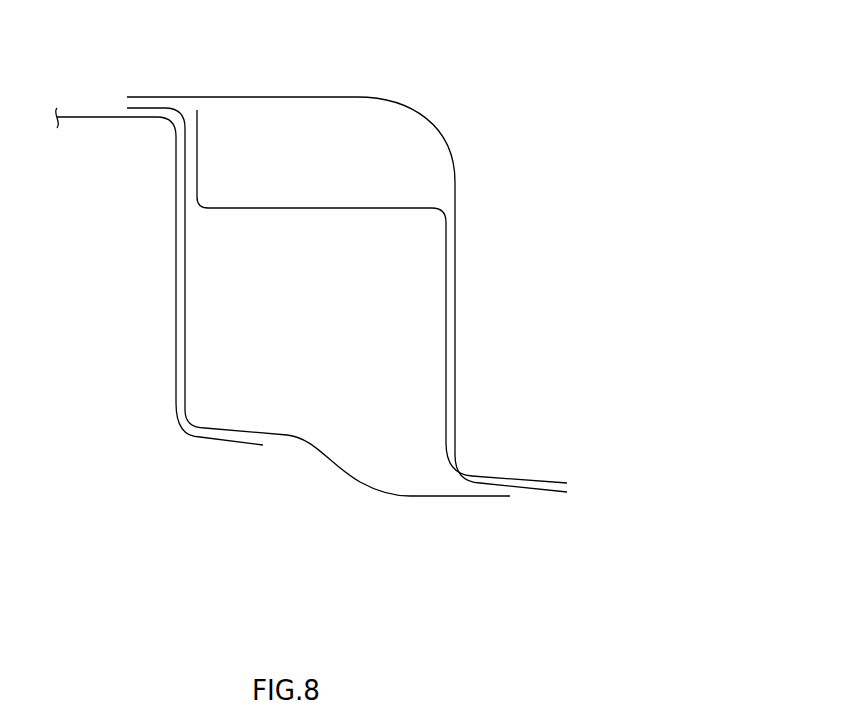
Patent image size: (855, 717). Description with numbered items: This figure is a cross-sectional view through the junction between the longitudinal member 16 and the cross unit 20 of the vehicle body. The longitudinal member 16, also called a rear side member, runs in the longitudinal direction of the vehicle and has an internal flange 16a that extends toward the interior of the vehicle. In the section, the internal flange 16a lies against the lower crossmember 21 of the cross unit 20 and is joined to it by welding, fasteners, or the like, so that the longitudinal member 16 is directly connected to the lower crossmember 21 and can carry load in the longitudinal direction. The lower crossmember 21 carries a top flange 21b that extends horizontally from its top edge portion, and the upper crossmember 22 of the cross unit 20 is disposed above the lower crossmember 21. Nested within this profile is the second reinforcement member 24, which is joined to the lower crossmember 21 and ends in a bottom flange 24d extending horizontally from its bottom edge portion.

The longitudinal member 16 is at (156, 276).
The internal flange 16a is at (176, 295).
The cross unit 20 is at (347, 267).
The lower crossmember 21 is at (311, 302).
The top flange 21b is at (145, 109).
The upper crossmember 22 is at (357, 97).
The second reinforcement member 24 is at (382, 330).
The bottom flange 24d is at (491, 487).